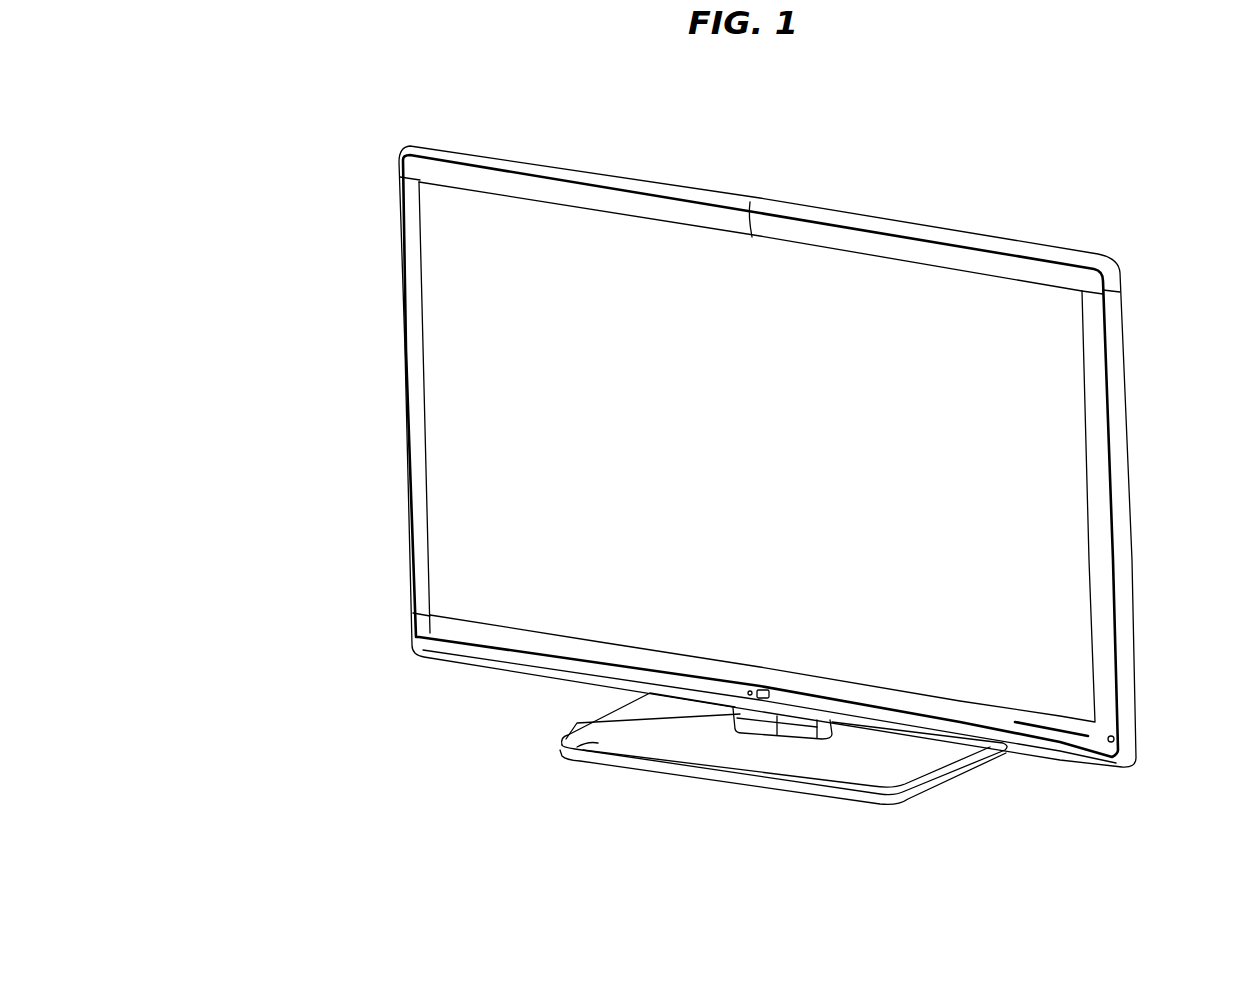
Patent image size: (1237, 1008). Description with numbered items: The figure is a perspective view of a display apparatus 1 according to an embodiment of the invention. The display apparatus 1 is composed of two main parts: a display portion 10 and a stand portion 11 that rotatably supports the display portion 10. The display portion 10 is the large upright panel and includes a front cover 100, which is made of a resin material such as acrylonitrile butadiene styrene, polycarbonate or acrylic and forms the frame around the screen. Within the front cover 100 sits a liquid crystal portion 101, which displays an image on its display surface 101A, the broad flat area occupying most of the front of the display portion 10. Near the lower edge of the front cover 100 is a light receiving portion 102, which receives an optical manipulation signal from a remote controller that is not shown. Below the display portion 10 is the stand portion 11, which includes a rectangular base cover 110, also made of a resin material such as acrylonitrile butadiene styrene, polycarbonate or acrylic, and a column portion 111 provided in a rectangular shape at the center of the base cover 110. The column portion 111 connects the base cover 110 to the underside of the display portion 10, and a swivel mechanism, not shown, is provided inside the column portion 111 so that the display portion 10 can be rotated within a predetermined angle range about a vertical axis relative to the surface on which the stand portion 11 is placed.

The display apparatus 1 is at (911, 201).
The display portion 10 is at (447, 158).
The front cover 100 is at (1012, 272).
The liquid crystal portion 101 is at (178, 393).
The display surface 101A is at (642, 262).
The light receiving portion 102 is at (757, 698).
The stand portion 11 is at (775, 792).
The base cover 110 is at (575, 751).
The column portion 111 is at (832, 738).